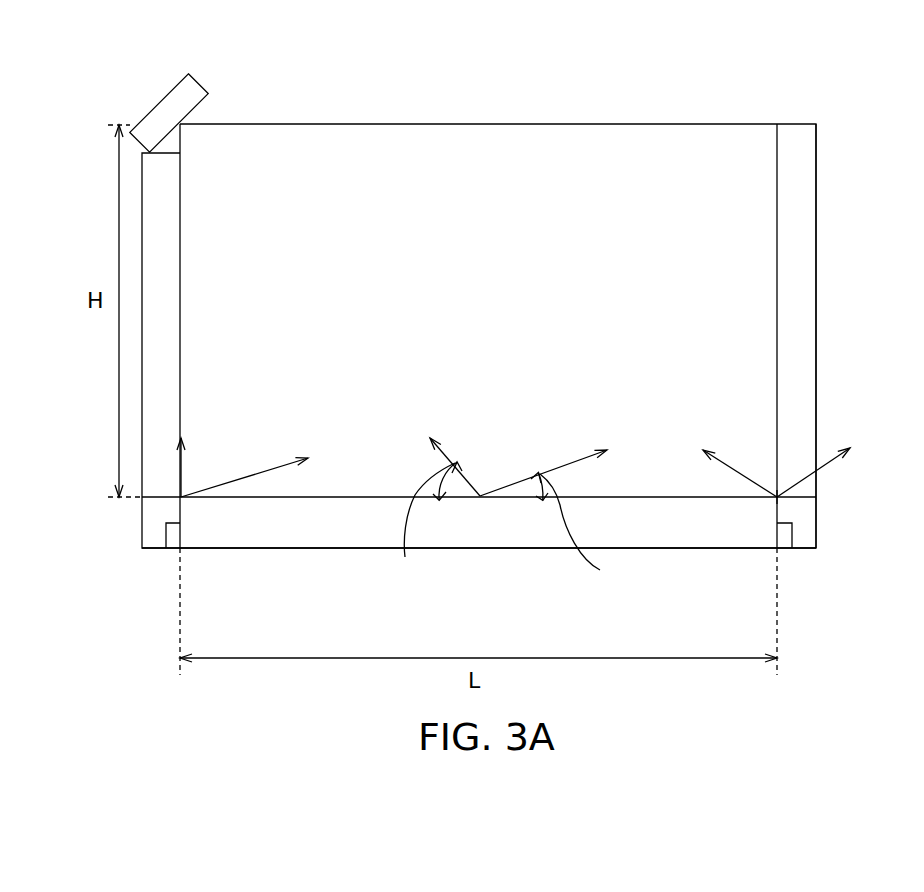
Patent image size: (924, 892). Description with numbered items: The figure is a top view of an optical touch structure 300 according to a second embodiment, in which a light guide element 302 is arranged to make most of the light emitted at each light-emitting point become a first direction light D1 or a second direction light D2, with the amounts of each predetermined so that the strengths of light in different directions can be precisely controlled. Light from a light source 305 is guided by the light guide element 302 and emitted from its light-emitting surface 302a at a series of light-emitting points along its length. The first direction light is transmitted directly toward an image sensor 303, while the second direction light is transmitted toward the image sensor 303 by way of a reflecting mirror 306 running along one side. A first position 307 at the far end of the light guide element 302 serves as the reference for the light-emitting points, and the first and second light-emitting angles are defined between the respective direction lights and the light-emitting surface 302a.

The optical touch structure 300 is at (328, 82).
The image sensor 303 is at (155, 120).
The reflecting mirror 306 is at (800, 313).
The light guide element 302 is at (330, 533).
The light-emitting surface 302a is at (364, 495).
The light source 305 is at (170, 542).
The first position 307 is at (786, 504).